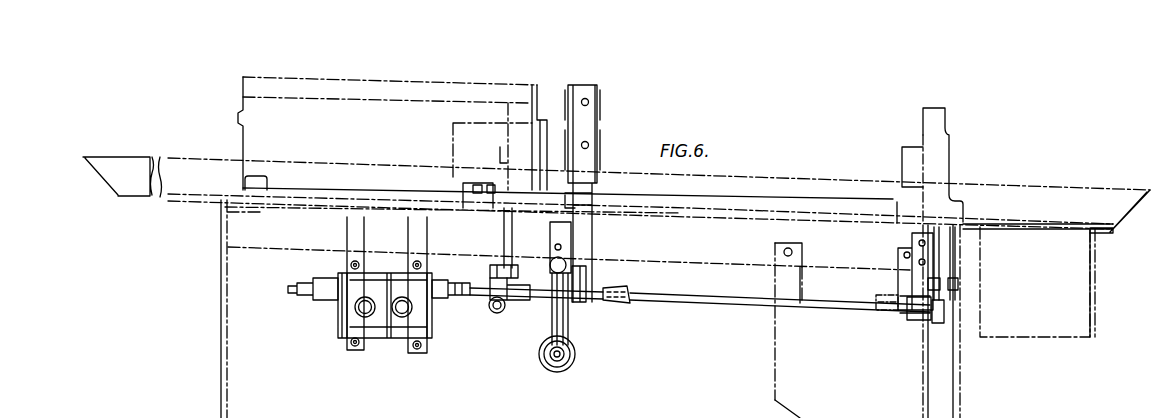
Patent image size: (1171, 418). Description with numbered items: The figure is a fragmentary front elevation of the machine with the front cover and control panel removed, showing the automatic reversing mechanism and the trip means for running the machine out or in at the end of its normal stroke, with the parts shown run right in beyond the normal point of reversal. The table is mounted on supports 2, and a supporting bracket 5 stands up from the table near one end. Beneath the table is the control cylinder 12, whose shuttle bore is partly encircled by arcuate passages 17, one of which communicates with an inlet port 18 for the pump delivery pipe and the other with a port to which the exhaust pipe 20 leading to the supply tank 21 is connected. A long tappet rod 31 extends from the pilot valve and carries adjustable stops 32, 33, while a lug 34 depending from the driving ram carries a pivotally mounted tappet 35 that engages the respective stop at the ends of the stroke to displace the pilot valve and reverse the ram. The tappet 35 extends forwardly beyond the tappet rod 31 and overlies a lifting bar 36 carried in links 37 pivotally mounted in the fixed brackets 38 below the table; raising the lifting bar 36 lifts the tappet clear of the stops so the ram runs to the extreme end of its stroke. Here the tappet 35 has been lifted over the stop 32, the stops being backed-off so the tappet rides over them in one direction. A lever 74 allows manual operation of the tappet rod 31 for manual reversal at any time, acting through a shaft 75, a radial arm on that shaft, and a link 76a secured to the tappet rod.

The supports 2 is at (222, 370).
The supporting bracket 5 is at (935, 160).
The control cylinder 12 is at (340, 318).
The arcuate passages 17 is at (616, 247).
The inlet port 18 is at (366, 313).
The exhaust pipe 20 is at (405, 312).
The supply tank 21 is at (776, 390).
The tappet rod 31 is at (737, 302).
The adjustable stop 32 is at (612, 292).
The adjustable stop 33 is at (897, 300).
The lug 34 is at (590, 229).
The tappet 35 is at (581, 300).
The lifting bar 36 is at (808, 310).
The links 37 is at (498, 268).
The fixed brackets 38 is at (508, 240).
The lever 74 is at (570, 262).
The shaft 75 is at (546, 359).
The link 76a is at (533, 312).